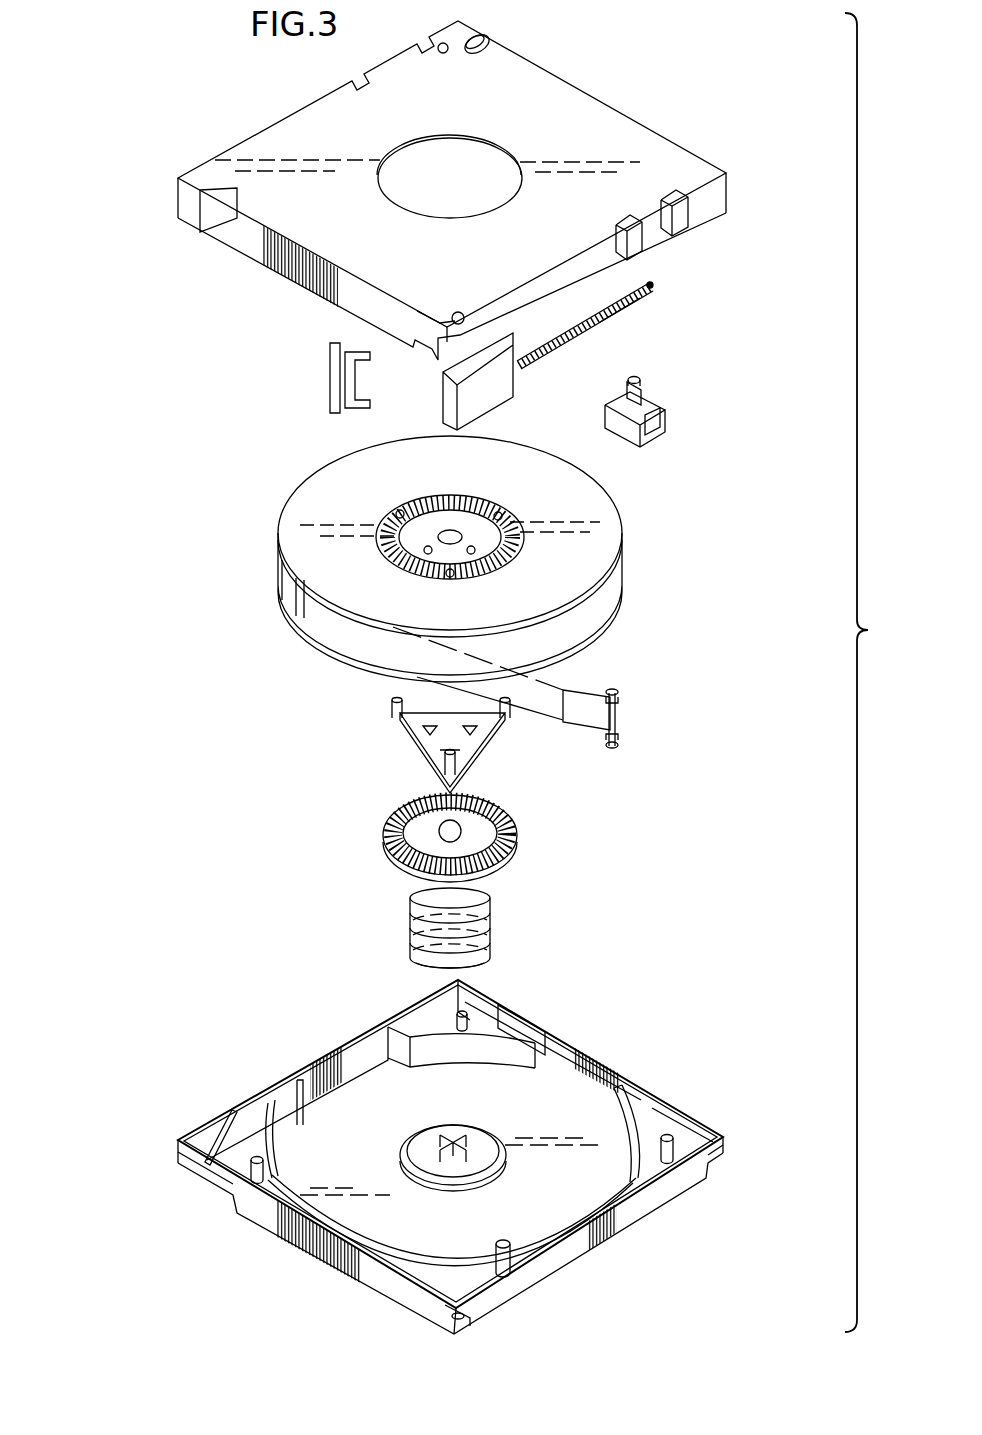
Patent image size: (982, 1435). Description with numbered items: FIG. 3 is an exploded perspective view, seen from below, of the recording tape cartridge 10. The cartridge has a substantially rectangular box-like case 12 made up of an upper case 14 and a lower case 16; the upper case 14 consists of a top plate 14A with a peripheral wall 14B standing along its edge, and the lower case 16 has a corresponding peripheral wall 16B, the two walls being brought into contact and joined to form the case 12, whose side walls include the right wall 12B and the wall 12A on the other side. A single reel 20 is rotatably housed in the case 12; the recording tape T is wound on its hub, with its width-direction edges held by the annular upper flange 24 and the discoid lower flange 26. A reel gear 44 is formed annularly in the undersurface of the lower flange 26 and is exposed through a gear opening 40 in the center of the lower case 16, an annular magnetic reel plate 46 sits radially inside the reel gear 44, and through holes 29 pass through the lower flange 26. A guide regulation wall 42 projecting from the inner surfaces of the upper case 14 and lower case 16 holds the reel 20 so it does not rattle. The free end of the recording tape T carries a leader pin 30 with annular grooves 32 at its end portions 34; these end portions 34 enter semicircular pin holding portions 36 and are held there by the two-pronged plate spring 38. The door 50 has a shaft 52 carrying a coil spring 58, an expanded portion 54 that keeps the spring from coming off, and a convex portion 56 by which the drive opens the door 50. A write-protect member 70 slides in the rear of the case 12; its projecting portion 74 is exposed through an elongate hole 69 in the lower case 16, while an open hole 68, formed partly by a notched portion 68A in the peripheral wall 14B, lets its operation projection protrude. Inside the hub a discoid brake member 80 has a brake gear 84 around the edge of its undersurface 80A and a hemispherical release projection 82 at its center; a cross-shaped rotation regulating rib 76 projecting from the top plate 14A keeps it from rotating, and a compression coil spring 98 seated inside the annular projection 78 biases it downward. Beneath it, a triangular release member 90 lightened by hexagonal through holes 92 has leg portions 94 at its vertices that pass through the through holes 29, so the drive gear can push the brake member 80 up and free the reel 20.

The recording tape cartridge 10 is at (707, 94).
The case 12 is at (438, 677).
The left side wall of case 12A is at (311, 754).
The right wall 12B is at (602, 1227).
The upper case 14 is at (746, 1151).
The top plate 14A is at (573, 1103).
The peripheral wall 14B is at (258, 1200).
The lower case 16 is at (747, 193).
The peripheral wall 16B is at (190, 205).
The reel 20 is at (636, 515).
The upper flange 24 is at (620, 610).
The lower flange 26 is at (580, 490).
The through holes 29 is at (398, 502).
The leader pin 30 is at (633, 722).
The annular grooves 32 is at (618, 697).
The end portions 34 is at (612, 690).
The pin holding portions 36 is at (485, 320).
The plate spring 38 is at (328, 382).
The gear opening 40 is at (491, 138).
The guide regulation wall 42 is at (425, 1046).
The reel gear 44 is at (547, 495).
The reel plate 46 is at (398, 540).
The door 50 is at (430, 397).
The shaft 52 is at (597, 333).
The expanded portion 54 is at (652, 290).
The convex portion 56 is at (443, 408).
The coil spring 58 is at (640, 308).
The open hole 68 is at (533, 1009).
The notched portion 68A is at (480, 998).
The elongate hole 69 is at (488, 40).
The write-protect member 70 is at (683, 424).
The projecting portion 74 is at (645, 380).
The rotation regulating rib 76 is at (458, 1147).
The annular projection 78 is at (436, 1192).
The brake member 80 is at (528, 868).
The undersurface 80A is at (478, 832).
The release projection 82 is at (458, 820).
The brake gear 84 is at (395, 832).
The release member 90 is at (406, 766).
The through holes 92 is at (423, 730).
The leg portions 94 is at (392, 705).
The compression coil spring 98 is at (495, 905).
The recording tape T is at (583, 717).